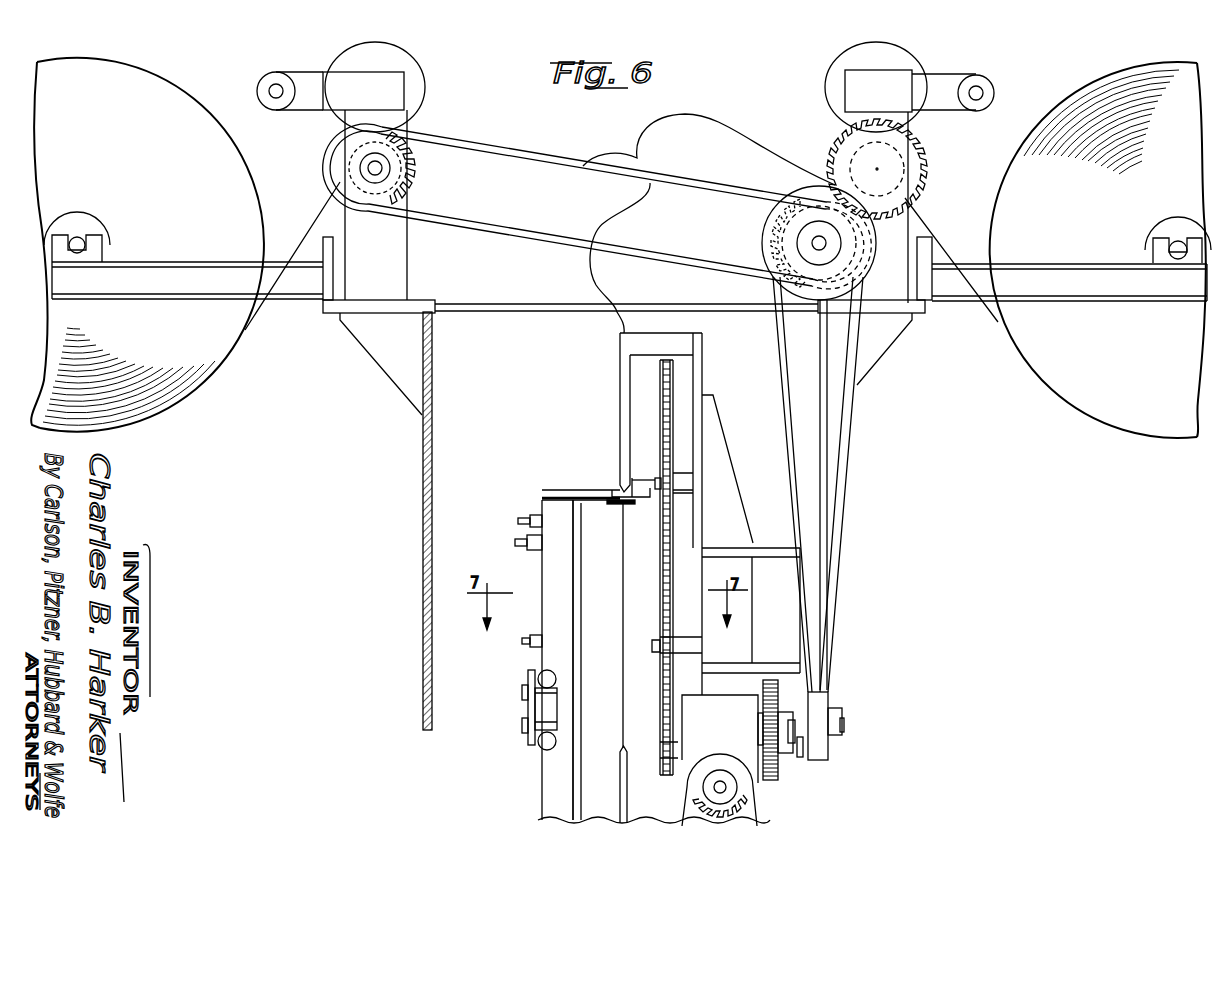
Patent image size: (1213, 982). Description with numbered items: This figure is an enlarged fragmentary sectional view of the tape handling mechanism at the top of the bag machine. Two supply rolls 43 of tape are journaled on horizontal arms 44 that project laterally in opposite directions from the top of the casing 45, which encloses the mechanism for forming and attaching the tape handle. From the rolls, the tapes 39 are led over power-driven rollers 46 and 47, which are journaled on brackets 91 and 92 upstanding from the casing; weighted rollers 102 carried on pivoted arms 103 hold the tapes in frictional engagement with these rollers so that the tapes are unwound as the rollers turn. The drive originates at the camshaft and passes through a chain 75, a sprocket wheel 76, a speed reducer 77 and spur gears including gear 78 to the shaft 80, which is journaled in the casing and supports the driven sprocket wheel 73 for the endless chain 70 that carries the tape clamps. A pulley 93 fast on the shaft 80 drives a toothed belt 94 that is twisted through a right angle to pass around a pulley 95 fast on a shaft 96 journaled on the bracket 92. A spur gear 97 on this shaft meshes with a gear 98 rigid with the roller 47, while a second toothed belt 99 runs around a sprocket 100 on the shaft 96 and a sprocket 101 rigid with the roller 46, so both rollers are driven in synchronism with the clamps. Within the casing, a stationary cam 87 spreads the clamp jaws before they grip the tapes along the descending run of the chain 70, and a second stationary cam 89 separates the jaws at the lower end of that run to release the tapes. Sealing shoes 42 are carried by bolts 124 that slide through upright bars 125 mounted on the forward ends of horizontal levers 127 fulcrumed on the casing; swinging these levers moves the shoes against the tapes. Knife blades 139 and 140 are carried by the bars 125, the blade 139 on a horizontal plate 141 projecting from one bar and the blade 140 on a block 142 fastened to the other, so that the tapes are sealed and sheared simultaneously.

The tapes 39 is at (600, 262).
The sealing elements 42 is at (617, 615).
The supply rolls 43 is at (235, 345).
The horizontal arms 44 is at (206, 262).
The casing 45 is at (423, 465).
The roller 46 is at (410, 192).
The roller 47 is at (878, 192).
The endless chain 70 is at (660, 698).
The driven sprocket wheel 73 is at (677, 752).
The chain 75 is at (692, 806).
The sprocket wheel 76 is at (700, 788).
The speed reducer 77 is at (723, 706).
The spur gear 78 is at (779, 770).
The shaft 80 is at (799, 752).
The cam 87 is at (621, 444).
The cam 89 is at (620, 772).
The bracket 91 is at (407, 264).
The bracket 92 is at (905, 231).
The pulley 93 is at (844, 743).
The toothed belt 94 is at (829, 640).
The pulley 95 is at (870, 270).
The shaft 96 is at (811, 243).
The spur gear 97 is at (866, 250).
The gear 98 is at (930, 173).
The second toothed belt 99 is at (518, 238).
The sprocket 100 is at (782, 233).
The sprocket 101 is at (418, 183).
The weighted rollers 102 is at (422, 103).
The arms 103 is at (308, 112).
The bolts 124 is at (530, 521).
The upright bars 125 is at (542, 567).
The horizontal levers 127 is at (545, 670).
The knife blade 139 is at (611, 504).
The knife blade 140 is at (612, 490).
The horizontal plate 141 is at (574, 489).
The block 142 is at (655, 480).